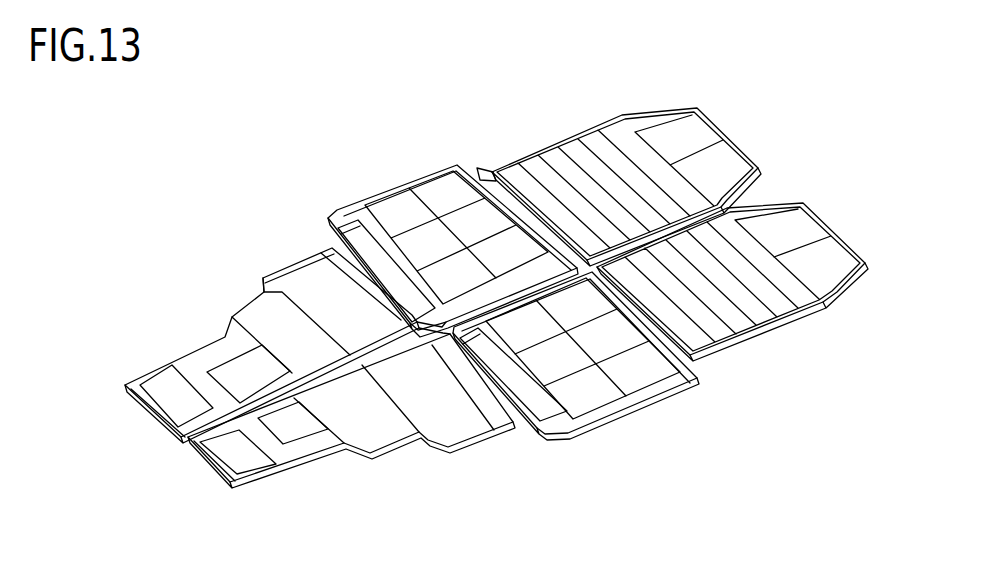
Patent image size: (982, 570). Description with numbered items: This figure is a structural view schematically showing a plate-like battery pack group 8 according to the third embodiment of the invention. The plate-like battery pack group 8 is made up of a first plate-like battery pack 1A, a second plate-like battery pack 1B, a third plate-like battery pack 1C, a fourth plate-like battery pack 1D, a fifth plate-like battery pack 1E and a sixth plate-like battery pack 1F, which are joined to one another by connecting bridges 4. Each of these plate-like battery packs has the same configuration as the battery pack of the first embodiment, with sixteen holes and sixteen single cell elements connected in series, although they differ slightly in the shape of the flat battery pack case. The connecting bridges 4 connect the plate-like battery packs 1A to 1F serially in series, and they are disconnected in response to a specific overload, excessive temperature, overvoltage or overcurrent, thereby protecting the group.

The plate-like battery pack group 8 is at (243, 190).
The first plate-like battery pack 1A is at (215, 362).
The second plate-like battery pack 1B is at (398, 205).
The third plate-like battery pack 1C is at (580, 155).
The fourth plate-like battery pack 1D is at (392, 425).
The fifth plate-like battery pack 1E is at (602, 392).
The sixth plate-like battery pack 1F is at (727, 312).
The connecting bridge 4 is at (363, 296).